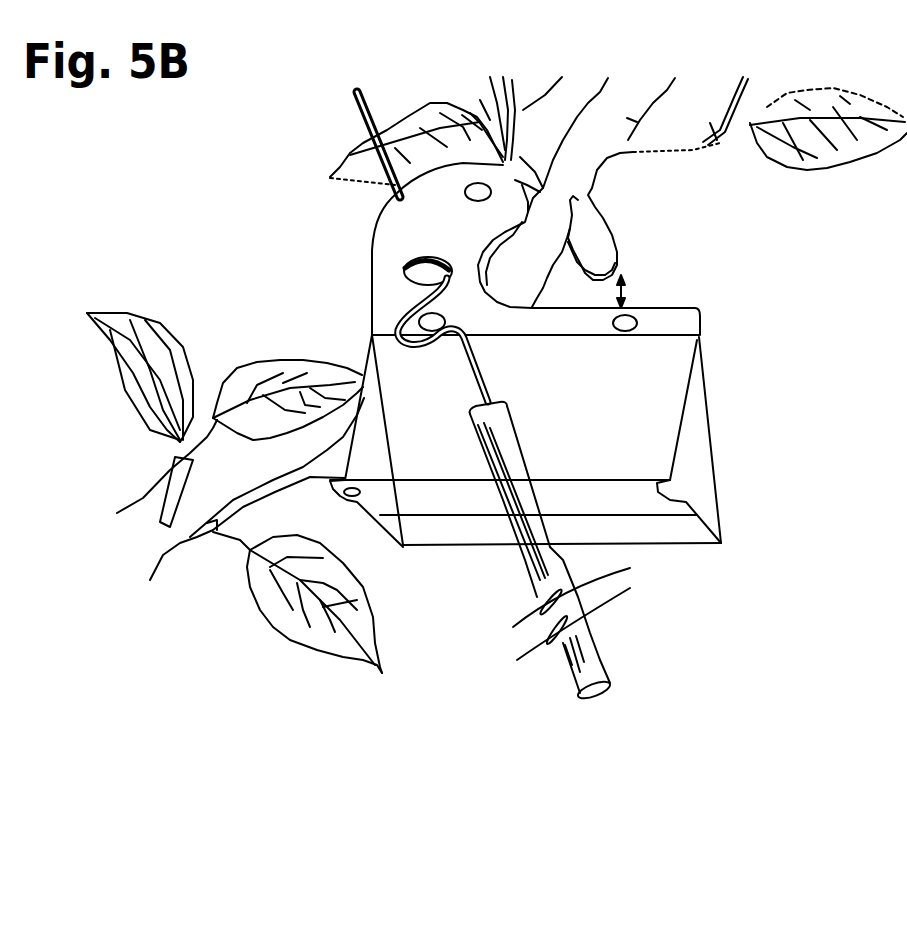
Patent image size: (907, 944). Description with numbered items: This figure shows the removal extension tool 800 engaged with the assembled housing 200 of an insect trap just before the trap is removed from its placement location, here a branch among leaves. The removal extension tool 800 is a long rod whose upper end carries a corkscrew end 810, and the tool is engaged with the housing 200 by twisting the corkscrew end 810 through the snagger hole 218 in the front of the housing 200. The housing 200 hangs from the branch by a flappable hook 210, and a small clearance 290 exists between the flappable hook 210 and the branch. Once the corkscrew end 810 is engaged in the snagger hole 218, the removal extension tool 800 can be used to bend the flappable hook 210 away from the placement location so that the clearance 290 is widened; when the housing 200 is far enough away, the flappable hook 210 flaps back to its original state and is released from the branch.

The housing 200 is at (818, 433).
The flappable hook 210 is at (600, 232).
The snagger hole 218 is at (403, 265).
The clearance 290 is at (623, 290).
The removal extension tool 800 is at (681, 684).
The corkscrew end 810 is at (403, 315).